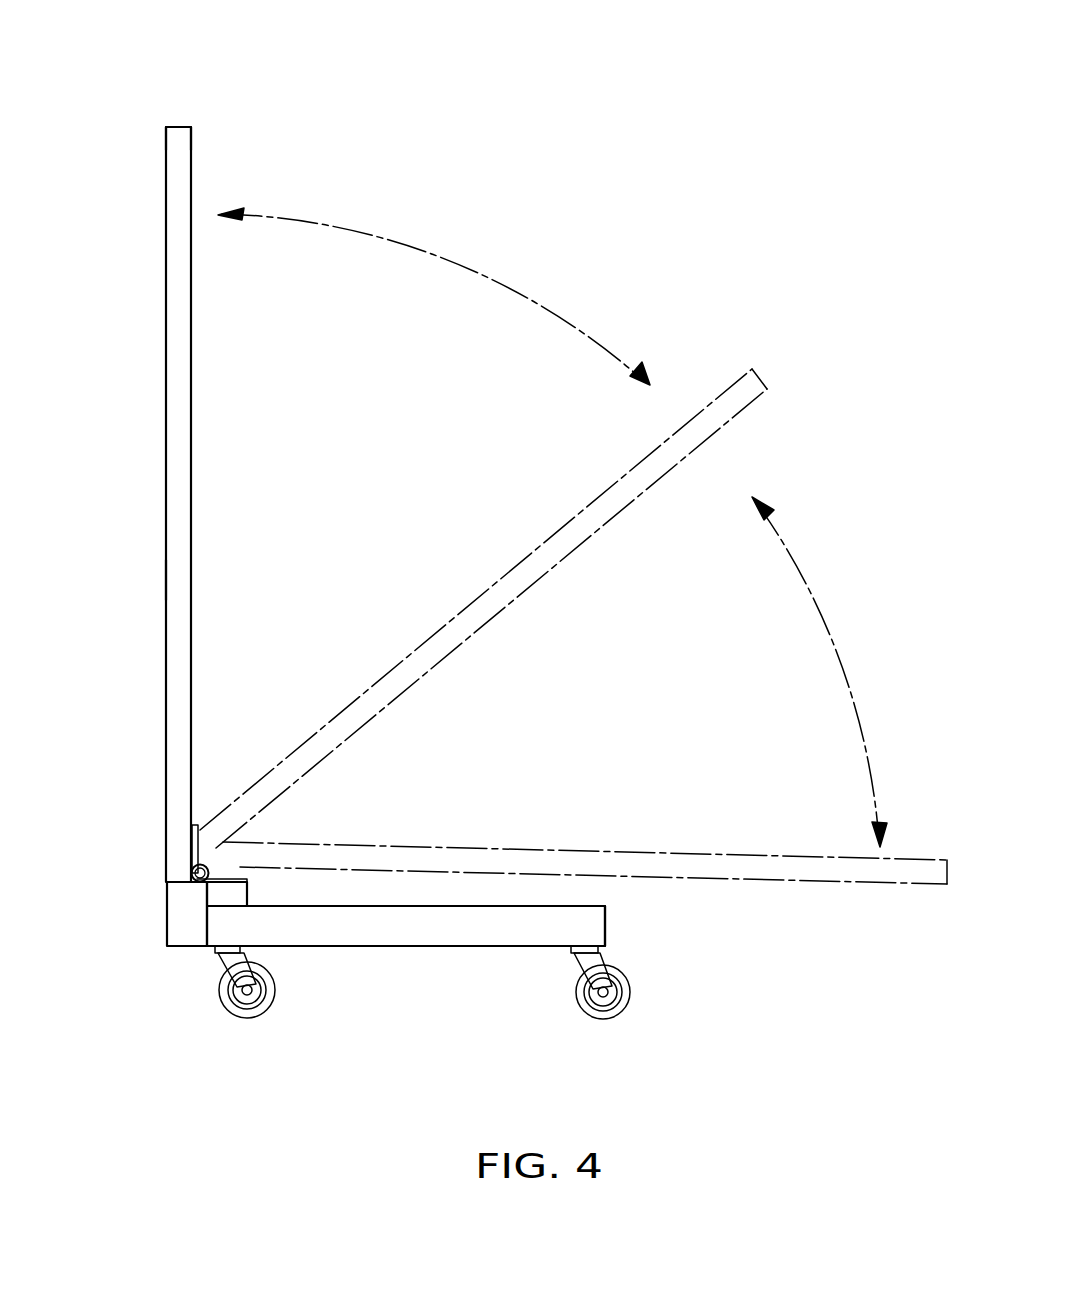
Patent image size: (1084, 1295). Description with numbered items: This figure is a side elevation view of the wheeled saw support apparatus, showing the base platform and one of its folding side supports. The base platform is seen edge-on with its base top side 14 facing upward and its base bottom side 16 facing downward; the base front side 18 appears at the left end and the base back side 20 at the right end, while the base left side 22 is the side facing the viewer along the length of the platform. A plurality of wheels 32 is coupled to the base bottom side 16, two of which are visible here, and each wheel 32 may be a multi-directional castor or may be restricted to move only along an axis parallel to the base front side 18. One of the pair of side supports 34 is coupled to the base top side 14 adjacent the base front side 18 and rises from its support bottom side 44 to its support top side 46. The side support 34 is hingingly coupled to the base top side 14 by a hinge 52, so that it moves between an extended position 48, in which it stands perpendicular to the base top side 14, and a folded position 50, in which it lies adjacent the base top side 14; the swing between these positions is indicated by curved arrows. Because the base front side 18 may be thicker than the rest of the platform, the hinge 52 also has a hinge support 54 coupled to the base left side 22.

The base top side 14 is at (522, 907).
The base bottom side 16 is at (510, 946).
The base front side 18 is at (167, 912).
The base back side 20 is at (605, 924).
The base left side 22 is at (412, 946).
The wheels 32 is at (235, 982).
The side supports 34 is at (180, 300).
The support bottom side 44 is at (167, 880).
The support top side 46 is at (170, 125).
The extended position 48 is at (178, 578).
The folded position 50 is at (733, 866).
The hinge 52 is at (200, 862).
The hinge support 54 is at (240, 900).